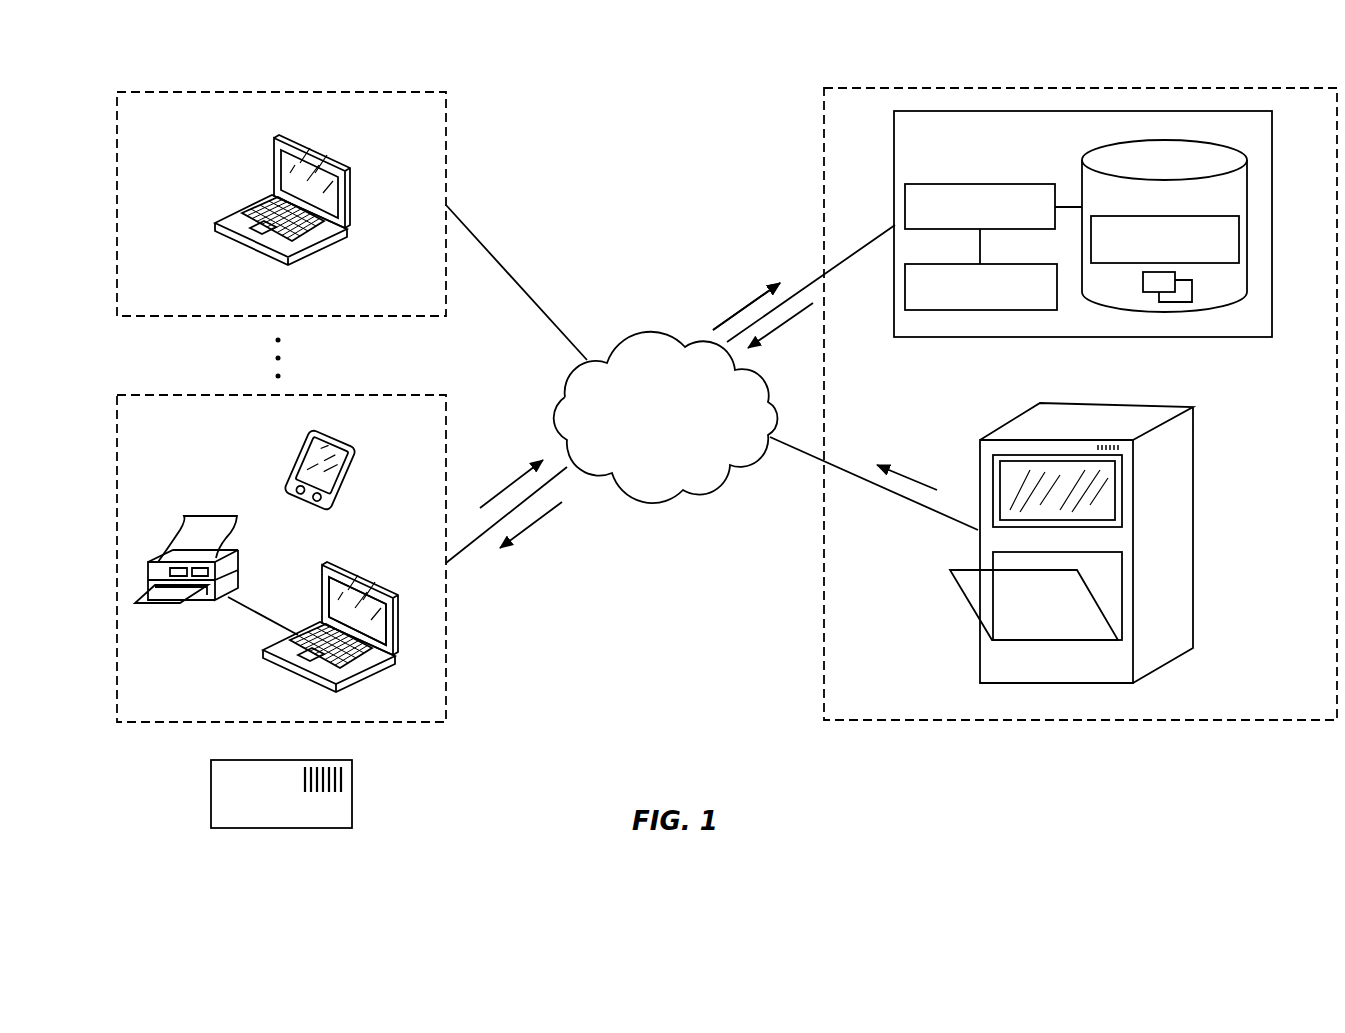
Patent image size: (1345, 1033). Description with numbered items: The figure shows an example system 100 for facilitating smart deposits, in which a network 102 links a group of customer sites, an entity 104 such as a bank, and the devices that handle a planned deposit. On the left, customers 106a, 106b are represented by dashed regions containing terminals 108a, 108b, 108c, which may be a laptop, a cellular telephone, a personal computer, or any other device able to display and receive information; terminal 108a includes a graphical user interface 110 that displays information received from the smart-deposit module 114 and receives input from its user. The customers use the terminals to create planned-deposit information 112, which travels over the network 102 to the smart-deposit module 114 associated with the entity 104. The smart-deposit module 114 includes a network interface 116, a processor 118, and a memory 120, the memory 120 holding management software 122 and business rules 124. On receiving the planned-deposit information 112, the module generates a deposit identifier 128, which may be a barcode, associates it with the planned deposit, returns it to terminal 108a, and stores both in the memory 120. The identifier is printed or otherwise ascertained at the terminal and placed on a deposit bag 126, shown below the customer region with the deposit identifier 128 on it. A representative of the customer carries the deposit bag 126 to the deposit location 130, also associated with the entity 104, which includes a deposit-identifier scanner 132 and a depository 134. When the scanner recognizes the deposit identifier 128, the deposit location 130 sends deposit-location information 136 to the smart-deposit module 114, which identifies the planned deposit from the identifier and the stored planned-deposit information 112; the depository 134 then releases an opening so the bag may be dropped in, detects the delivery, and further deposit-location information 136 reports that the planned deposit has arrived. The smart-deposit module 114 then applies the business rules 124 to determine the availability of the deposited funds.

The system 100 is at (700, 90).
The network 102 is at (648, 332).
The entity 104 is at (1084, 88).
The customer 106a is at (446, 633).
The customer 106b is at (446, 152).
The terminal 108a is at (358, 632).
The terminal 108b is at (343, 480).
The terminal 108c is at (313, 152).
The graphical user interface 110 is at (355, 600).
The planned-deposit information 112 is at (515, 483).
The smart-deposit module 114 is at (1273, 148).
The network interface 116 is at (1007, 263).
The processor 118 is at (980, 185).
The memory 120 is at (1250, 190).
The management software 122 is at (1242, 238).
The business rules 124 is at (1193, 292).
The deposit bag 126 is at (235, 760).
The deposit identifier 128 is at (535, 523).
The deposit location 130 is at (1193, 423).
The deposit-identifier scanner 132 is at (1122, 490).
The depository 134 is at (1122, 597).
The deposit-location information 136 is at (748, 302).